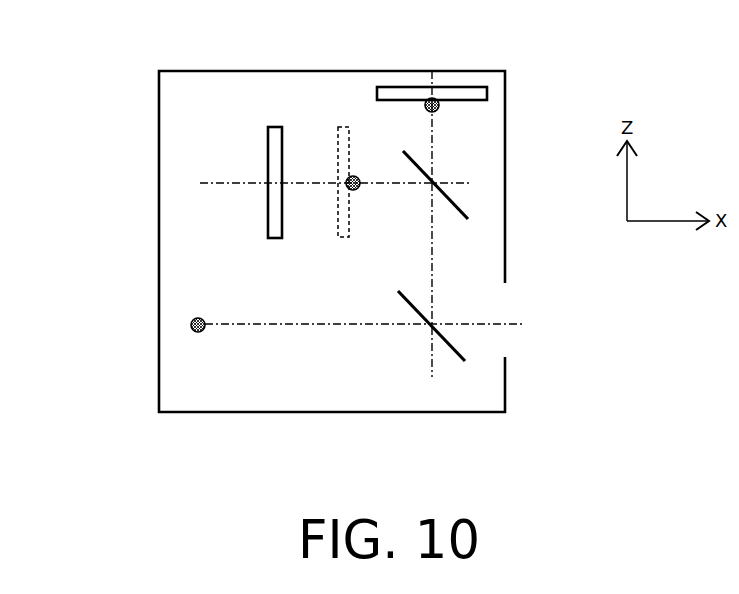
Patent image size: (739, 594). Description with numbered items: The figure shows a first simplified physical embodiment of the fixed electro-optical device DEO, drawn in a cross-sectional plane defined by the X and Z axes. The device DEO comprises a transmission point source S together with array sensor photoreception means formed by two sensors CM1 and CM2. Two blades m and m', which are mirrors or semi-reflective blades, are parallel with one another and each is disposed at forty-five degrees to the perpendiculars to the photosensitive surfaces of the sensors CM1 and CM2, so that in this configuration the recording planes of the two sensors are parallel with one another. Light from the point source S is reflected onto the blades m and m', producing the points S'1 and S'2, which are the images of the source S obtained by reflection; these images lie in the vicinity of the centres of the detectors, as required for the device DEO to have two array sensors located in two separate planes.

The fixed electro-optical device DEO is at (121, 162).
The sensor CM1 is at (409, 87).
The sensor CM2 is at (268, 205).
The image of the point source S'1 is at (449, 130).
The image of the point source S'2 is at (328, 187).
The blade m' is at (425, 196).
The blade m is at (423, 335).
The point source S is at (205, 355).